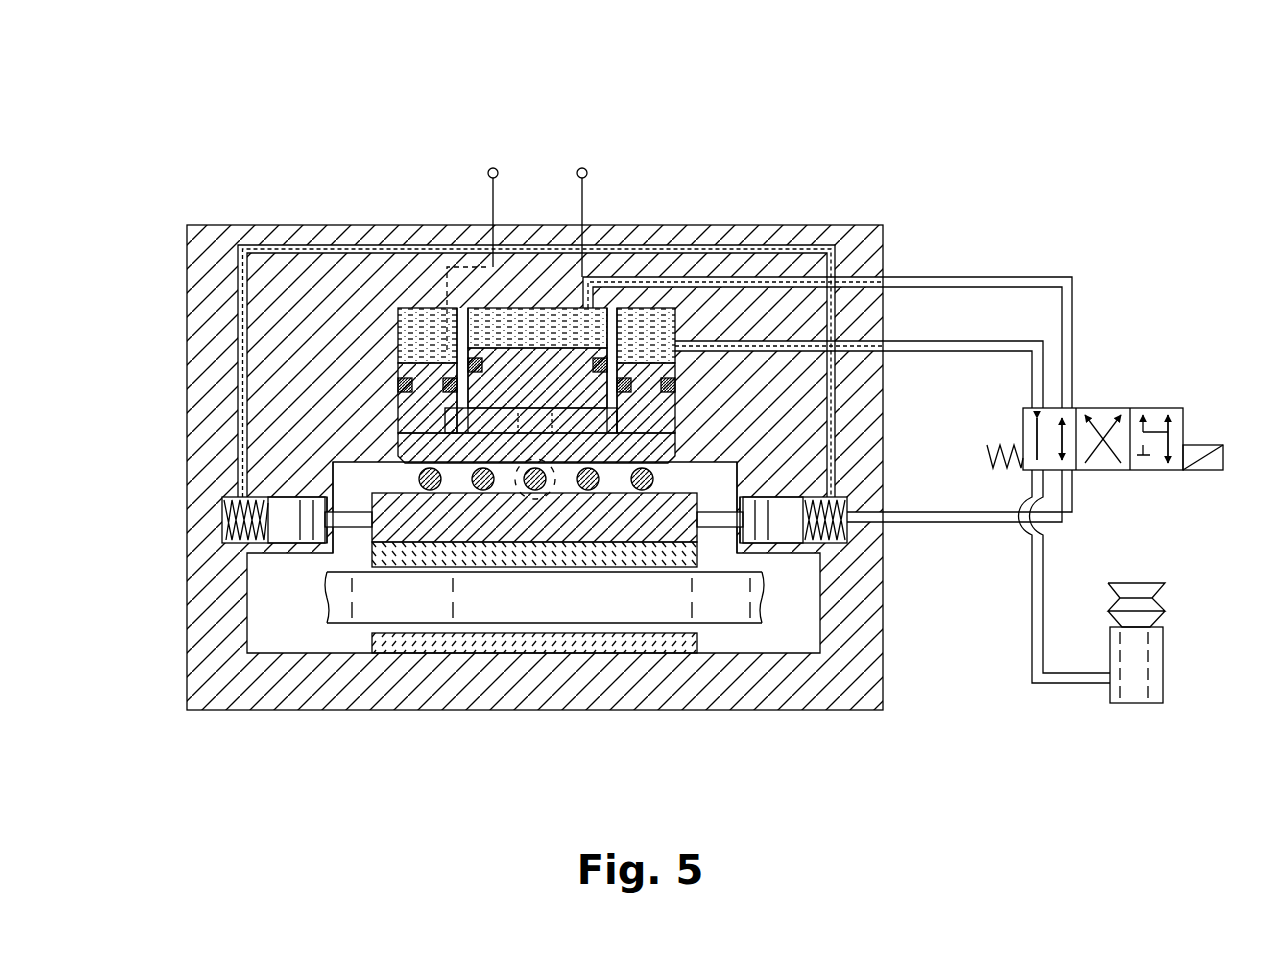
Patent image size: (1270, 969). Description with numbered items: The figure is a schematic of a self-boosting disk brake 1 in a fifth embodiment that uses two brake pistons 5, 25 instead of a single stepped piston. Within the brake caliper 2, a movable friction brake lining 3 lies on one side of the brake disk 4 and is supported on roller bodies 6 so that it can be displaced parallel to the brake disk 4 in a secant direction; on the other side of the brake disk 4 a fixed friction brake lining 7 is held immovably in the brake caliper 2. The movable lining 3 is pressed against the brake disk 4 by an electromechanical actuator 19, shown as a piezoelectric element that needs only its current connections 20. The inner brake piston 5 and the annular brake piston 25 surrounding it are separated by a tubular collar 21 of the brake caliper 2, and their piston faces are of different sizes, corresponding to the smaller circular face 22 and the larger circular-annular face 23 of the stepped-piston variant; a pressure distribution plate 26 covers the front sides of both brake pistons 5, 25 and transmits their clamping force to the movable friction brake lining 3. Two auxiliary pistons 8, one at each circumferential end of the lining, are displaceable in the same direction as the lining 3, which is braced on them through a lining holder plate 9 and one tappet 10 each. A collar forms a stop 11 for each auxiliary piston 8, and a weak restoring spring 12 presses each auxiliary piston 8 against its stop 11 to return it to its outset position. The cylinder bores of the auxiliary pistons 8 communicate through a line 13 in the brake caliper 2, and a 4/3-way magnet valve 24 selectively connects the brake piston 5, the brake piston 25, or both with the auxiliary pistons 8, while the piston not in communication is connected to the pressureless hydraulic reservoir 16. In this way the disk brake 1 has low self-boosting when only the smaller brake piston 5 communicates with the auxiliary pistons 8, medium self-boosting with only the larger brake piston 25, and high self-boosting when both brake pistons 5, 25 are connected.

The disk brake 1 is at (214, 158).
The brake caliper 2 is at (212, 357).
The friction brake lining 3 is at (560, 555).
The brake disk 4 is at (503, 593).
The brake piston 5 is at (528, 304).
The roller bodies 6 is at (640, 490).
The fixed friction brake lining 7 is at (443, 648).
The auxiliary piston 8 is at (283, 513).
The lining holder plate 9 is at (432, 545).
The tappet 10 is at (353, 518).
The stop 11 is at (322, 530).
The restoring spring 12 is at (250, 520).
The line 13 is at (816, 247).
The hydraulic reservoir 16 is at (1152, 677).
The actuator 19 is at (475, 245).
The current connections 20 is at (493, 168).
The tubular collar 21 is at (438, 352).
The circular face 22 is at (583, 345).
The circular-annular face 23 is at (645, 350).
The 4/3-way magnet valve 24 is at (1130, 408).
The brake piston 25 is at (428, 400).
The pressure distribution plate 26 is at (668, 453).